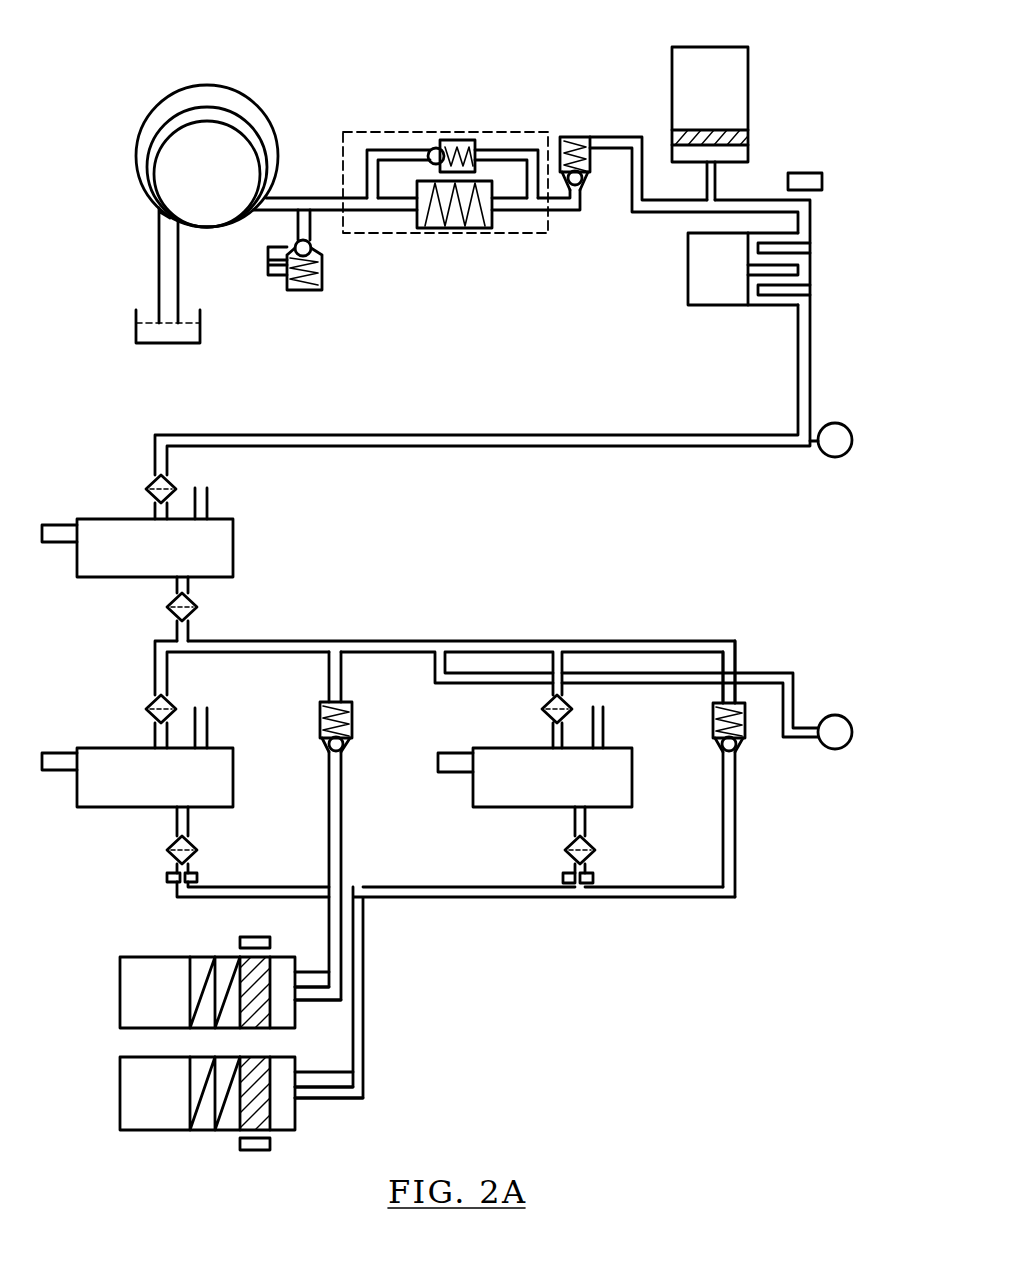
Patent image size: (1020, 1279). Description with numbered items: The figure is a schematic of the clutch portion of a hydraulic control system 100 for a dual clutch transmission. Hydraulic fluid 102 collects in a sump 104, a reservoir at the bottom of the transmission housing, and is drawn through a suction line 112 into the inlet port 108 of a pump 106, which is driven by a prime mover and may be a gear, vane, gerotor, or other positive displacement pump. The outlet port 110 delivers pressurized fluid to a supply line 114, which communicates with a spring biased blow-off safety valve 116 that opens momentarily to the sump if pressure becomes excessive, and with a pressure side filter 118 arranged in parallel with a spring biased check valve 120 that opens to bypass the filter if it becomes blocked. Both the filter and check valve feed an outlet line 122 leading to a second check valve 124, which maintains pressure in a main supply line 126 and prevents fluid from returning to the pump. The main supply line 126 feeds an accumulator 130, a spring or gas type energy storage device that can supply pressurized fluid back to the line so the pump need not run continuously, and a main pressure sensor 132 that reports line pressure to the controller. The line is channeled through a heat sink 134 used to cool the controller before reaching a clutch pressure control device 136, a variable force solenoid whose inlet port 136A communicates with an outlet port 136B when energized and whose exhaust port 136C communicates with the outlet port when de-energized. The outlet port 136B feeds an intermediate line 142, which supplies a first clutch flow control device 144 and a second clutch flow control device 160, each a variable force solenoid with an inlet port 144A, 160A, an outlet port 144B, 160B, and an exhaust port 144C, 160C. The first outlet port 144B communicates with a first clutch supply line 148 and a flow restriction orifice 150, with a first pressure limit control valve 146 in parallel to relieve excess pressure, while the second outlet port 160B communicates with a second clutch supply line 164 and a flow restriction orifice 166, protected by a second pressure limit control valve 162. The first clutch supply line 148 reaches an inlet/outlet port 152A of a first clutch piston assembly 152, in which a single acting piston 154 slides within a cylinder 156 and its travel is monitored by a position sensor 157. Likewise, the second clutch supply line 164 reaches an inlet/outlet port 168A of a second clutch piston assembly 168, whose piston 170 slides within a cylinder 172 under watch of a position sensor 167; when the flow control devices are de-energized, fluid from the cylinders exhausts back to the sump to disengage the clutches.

The hydraulic control system 100 is at (795, 74).
The hydraulic fluid 102 is at (152, 323).
The sump 104 is at (200, 332).
The pump 106 is at (253, 98).
The inlet port 108 is at (166, 218).
The outlet port 110 is at (277, 192).
The suction line 112 is at (157, 268).
The supply line 114 is at (262, 212).
The spring biased blow-off safety valve 116 is at (322, 273).
The pressure side filter 118 is at (456, 230).
The spring biased check valve 120 is at (457, 138).
The outlet line 122 is at (525, 212).
The second check valve 124 is at (558, 157).
The main supply line 126 is at (658, 212).
The accumulator 130 is at (683, 68).
The main pressure sensor 132 is at (800, 173).
The heat sink 134 is at (688, 295).
The clutch pressure control device 136 is at (97, 568).
The inlet port 136A is at (155, 517).
The outlet port 136B is at (187, 583).
The exhaust port 136C is at (207, 512).
The intermediate line 142 is at (400, 641).
The first clutch flow control device 144 is at (97, 797).
The inlet port 144A is at (155, 745).
The outlet port 144B is at (187, 812).
The exhaust port 144C is at (207, 740).
The first pressure limit control valve 146 is at (352, 715).
The first clutch supply line 148 is at (287, 887).
The flow restriction orifice 150 is at (167, 877).
The first clutch piston assembly 152 is at (99, 1000).
The inlet/outlet port 152A is at (297, 992).
The piston 154 is at (248, 970).
The cylinder 156 is at (295, 972).
The position sensor 157 is at (258, 933).
The second clutch flow control device 160 is at (493, 798).
The inlet port 160A is at (553, 745).
The outlet port 160B is at (586, 812).
The exhaust port 160C is at (603, 740).
The second pressure limit control valve 162 is at (745, 730).
The second clutch supply line 164 is at (638, 898).
The flow restriction orifice 166 is at (562, 877).
The position sensor 167 is at (258, 1152).
The second clutch piston assembly 168 is at (100, 1108).
The inlet/outlet port 168A is at (297, 1090).
The piston 170 is at (248, 1120).
The cylinder 172 is at (295, 1075).